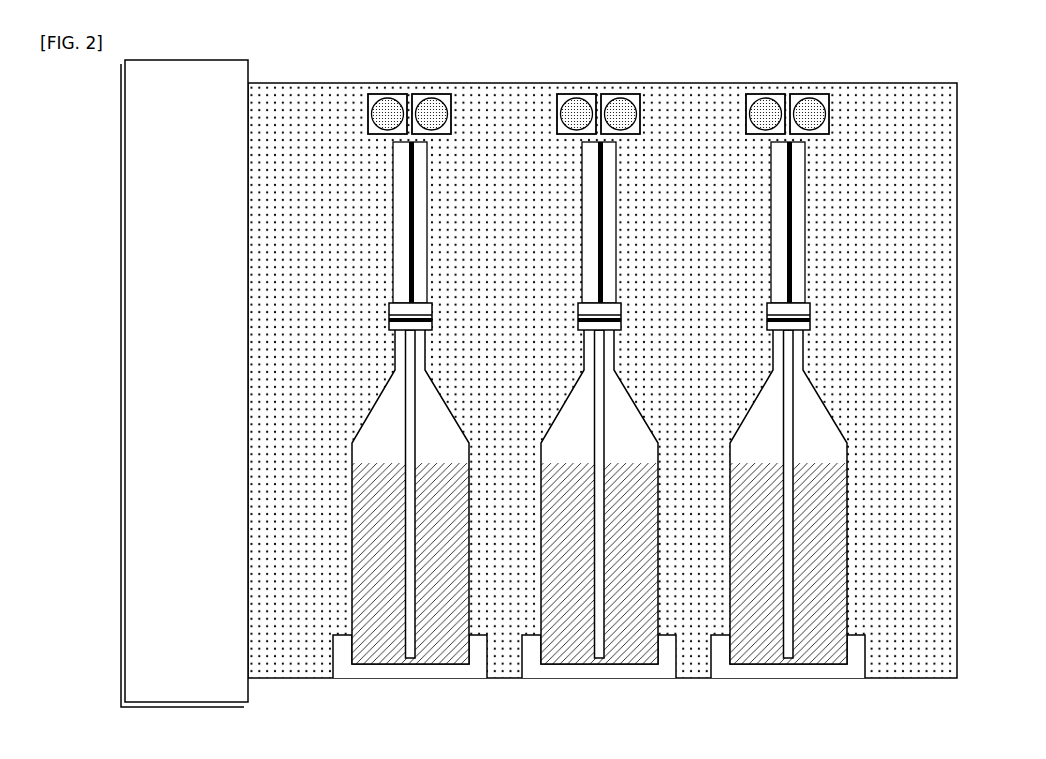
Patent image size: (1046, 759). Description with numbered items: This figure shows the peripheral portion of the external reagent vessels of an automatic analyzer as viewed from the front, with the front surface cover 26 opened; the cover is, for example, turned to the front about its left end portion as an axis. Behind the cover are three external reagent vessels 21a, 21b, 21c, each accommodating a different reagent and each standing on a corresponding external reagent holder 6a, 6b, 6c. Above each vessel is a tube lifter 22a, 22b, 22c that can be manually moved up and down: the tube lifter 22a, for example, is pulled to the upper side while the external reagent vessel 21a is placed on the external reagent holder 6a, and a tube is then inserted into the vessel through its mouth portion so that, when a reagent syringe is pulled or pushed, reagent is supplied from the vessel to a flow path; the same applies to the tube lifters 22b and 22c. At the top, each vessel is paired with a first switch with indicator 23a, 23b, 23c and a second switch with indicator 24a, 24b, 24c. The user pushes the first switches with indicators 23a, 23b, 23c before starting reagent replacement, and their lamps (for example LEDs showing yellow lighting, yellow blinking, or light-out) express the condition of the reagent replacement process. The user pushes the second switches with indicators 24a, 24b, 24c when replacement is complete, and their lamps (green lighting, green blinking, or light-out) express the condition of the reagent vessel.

The front surface cover 26 is at (121, 230).
The external reagent holder 6a is at (337, 635).
The external reagent holder 6b is at (588, 631).
The external reagent holder 6c is at (777, 631).
The external reagent vessel 21a is at (371, 412).
The external reagent vessel 21b is at (574, 497).
The external reagent vessel 21c is at (763, 497).
The tube lifter 22a is at (391, 318).
The tube lifter 22b is at (563, 310).
The tube lifter 22c is at (752, 310).
The first switch with indicator 23a is at (366, 120).
The first switch with indicator 23b is at (541, 114).
The first switch with indicator 23c is at (730, 114).
The second switch with indicator 24a is at (452, 125).
The second switch with indicator 24b is at (655, 125).
The second switch with indicator 24c is at (844, 125).